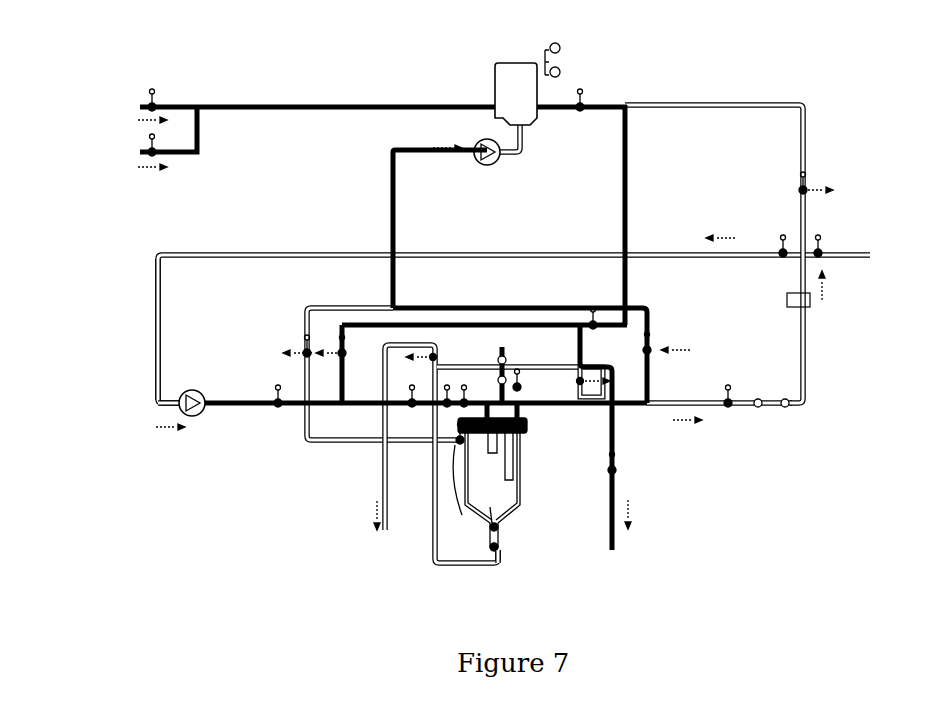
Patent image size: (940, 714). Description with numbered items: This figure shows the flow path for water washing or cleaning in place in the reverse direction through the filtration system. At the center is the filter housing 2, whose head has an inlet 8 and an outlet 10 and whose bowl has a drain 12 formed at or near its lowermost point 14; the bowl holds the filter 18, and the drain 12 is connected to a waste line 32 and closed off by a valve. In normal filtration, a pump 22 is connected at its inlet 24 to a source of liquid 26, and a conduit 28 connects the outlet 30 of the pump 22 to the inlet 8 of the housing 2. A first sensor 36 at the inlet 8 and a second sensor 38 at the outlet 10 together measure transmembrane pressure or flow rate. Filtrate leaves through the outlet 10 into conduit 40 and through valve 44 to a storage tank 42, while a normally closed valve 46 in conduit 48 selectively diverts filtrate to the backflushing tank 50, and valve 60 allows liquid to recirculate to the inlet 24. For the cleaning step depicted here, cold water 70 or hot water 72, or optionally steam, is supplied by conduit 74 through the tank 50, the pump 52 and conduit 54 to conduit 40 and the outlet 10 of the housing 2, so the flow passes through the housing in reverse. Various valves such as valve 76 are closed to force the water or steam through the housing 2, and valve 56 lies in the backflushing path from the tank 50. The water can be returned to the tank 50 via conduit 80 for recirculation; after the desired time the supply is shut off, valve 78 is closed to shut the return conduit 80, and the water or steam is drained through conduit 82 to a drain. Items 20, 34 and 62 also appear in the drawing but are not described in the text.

The filter housing 2 is at (522, 478).
The inlet 8 is at (500, 375).
The outlet 10 is at (525, 408).
The drain 12 is at (500, 527).
The lowermost point 14 is at (512, 512).
The filter 18 is at (520, 452).
The sensor lead 20 is at (459, 483).
The pump 22 is at (203, 395).
The inlet 24 is at (178, 398).
The source of liquid 26 is at (157, 400).
The conduit 28 is at (280, 410).
The outlet 30 is at (215, 408).
The waste line 32 is at (470, 573).
The tank outlet pipe 34 is at (500, 555).
The first sensor 36 is at (475, 398).
The second sensor 38 is at (508, 380).
The conduit 40 is at (710, 405).
The storage tank 42 is at (870, 255).
The valve 44 is at (820, 250).
The valve 46 is at (806, 188).
The conduit 48 is at (803, 130).
The backflushing tank 50 is at (522, 73).
The pump 52 is at (480, 165).
The conduit 54 is at (465, 305).
The valve 56 is at (650, 348).
The valve 60 is at (784, 248).
The supply line 62 is at (283, 253).
The cold water 70 is at (150, 100).
The hot water 72 is at (148, 150).
The conduit 74 is at (250, 105).
The valve 76 is at (303, 350).
The valve 78 is at (596, 330).
The water return conduit 80 is at (625, 190).
The conduit 82 is at (620, 545).